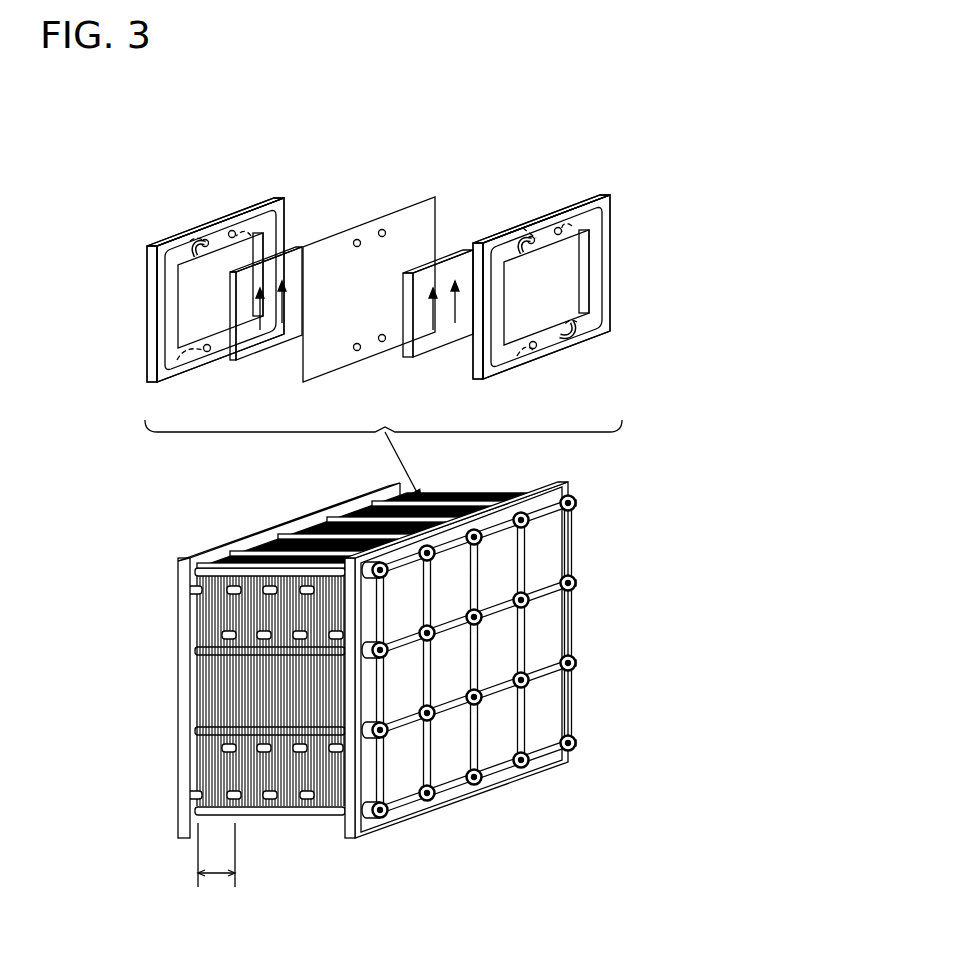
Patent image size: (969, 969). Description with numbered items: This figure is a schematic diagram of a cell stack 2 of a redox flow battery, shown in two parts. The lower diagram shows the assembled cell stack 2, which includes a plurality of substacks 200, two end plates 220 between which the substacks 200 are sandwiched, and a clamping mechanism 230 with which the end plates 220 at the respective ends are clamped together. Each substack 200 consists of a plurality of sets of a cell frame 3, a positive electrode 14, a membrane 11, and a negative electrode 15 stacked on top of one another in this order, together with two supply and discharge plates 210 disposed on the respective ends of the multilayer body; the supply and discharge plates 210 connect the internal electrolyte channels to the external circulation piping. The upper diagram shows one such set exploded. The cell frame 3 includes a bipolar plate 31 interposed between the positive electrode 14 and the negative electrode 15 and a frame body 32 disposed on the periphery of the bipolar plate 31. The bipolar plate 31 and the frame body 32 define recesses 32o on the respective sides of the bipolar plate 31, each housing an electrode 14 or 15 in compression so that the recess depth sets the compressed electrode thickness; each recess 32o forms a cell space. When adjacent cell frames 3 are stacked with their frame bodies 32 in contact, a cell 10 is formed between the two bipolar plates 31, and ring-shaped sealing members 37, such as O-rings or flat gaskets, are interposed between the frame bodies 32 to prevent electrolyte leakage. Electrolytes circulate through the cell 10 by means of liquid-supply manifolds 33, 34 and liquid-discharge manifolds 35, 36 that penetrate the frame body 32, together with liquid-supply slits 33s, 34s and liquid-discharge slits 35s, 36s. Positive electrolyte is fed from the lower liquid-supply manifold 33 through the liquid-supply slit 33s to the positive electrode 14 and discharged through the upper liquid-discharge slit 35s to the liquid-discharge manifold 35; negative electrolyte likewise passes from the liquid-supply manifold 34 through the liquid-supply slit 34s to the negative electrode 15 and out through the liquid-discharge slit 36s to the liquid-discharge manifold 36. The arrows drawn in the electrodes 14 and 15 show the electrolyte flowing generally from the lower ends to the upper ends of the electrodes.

The cell stack 2 is at (583, 630).
The cell frame 3 is at (88, 316).
The cell 10 is at (355, 148).
The membrane 11 is at (393, 213).
The positive electrode 14 is at (283, 343).
The negative electrode 15 is at (427, 348).
The bipolar plate 31 is at (193, 310).
The frame body 32 is at (155, 300).
The recess 32o is at (253, 252).
The liquid-supply manifold 33 is at (575, 343).
The liquid-supply slit 33s is at (577, 322).
The liquid-supply manifold 34 is at (206, 356).
The liquid-supply slit 34s is at (177, 360).
The liquid-discharge manifold 35 is at (193, 248).
The liquid-discharge slit 35s is at (190, 241).
The liquid-discharge manifold 36 is at (232, 230).
The liquid-discharge slit 36s is at (251, 236).
The sealing member 37 is at (278, 222).
The substack 200 is at (218, 871).
The supply and discharge plate 210 is at (200, 777).
The end plate 220 is at (177, 583).
The clamping mechanism 230 is at (300, 536).